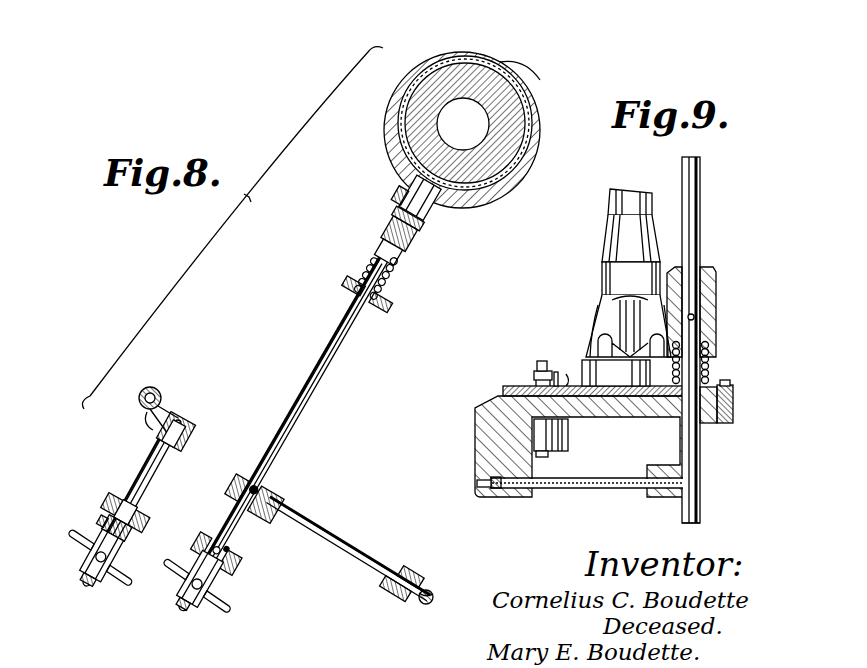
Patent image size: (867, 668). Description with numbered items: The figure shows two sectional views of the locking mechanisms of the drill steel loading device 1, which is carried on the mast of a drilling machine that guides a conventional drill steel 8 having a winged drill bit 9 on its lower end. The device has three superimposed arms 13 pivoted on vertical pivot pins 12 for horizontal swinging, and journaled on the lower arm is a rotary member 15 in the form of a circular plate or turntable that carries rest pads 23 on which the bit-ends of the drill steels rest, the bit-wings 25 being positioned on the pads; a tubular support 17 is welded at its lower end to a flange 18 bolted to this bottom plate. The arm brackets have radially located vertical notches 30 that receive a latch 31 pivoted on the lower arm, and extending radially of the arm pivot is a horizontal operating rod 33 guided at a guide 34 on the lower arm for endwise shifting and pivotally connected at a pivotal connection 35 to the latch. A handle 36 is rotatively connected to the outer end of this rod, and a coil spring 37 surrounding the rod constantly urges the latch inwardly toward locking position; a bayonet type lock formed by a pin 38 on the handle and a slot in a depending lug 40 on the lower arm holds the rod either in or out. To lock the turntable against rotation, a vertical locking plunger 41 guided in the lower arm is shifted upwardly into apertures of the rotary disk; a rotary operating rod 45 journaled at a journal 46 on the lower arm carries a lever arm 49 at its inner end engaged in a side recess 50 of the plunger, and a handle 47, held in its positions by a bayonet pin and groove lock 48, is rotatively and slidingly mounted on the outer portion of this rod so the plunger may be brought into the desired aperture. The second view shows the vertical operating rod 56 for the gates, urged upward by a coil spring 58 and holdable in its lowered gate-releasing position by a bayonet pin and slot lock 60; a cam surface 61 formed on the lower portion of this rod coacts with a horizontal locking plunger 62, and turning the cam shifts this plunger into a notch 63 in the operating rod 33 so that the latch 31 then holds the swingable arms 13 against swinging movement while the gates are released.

In FIG. 9, the loading device 1 is at (504, 387).
In FIG. 9, the drill steel 8 is at (608, 197).
In FIG. 9, the winged drill bit 9 is at (602, 312).
In FIG. 8, the vertical pivot pins 12 is at (502, 106).
In FIG. 8, the superimposed arms 13 is at (394, 98).
In FIG. 9, the superimposed arms 13 is at (598, 414).
In FIG. 9, the rotary member 15 is at (538, 372).
In FIG. 9, the tubular support 17 is at (555, 372).
In FIG. 9, the flange 18 is at (566, 372).
In FIG. 9, the rest pads 23 is at (641, 376).
In FIG. 9, the bit-wings 25 is at (628, 324).
In FIG. 8, the notches 30 is at (395, 185).
In FIG. 8, the latch 31 is at (425, 216).
In FIG. 8, the operating rod 33 is at (323, 366).
In FIG. 9, the operating rod 33 is at (480, 483).
In FIG. 8, the guide 34 is at (392, 299).
In FIG. 8, the pivotal connection 35 is at (416, 240).
In FIG. 8, the handle 36 is at (211, 594).
In FIG. 8, the coil spring 37 is at (372, 262).
In FIG. 8, the pin 38 is at (232, 550).
In FIG. 8, the depending lug 40 is at (233, 566).
In FIG. 8, the locking plunger 41 is at (151, 388).
In FIG. 8, the rotary operating rod 45 is at (163, 468).
In FIG. 8, the journal 46 is at (151, 427).
In FIG. 8, the handle 47 is at (88, 560).
In FIG. 8, the bayonet pin and groove lock 48 is at (106, 520).
In FIG. 8, the lever arm 49 is at (182, 411).
In FIG. 8, the side recess 50 is at (152, 394).
In FIG. 8, the vertical operating rod 56 is at (434, 596).
In FIG. 9, the vertical operating rod 56 is at (700, 248).
In FIG. 9, the coil spring 58 is at (712, 370).
In FIG. 9, the bayonet pin and slot lock 60 is at (694, 318).
In FIG. 8, the cam surface 61 is at (430, 582).
In FIG. 9, the cam surface 61 is at (703, 516).
In FIG. 8, the horizontal locking plunger 62 is at (340, 538).
In FIG. 9, the horizontal locking plunger 62 is at (590, 489).
In FIG. 8, the notch 63 is at (264, 486).
In FIG. 9, the notch 63 is at (497, 490).